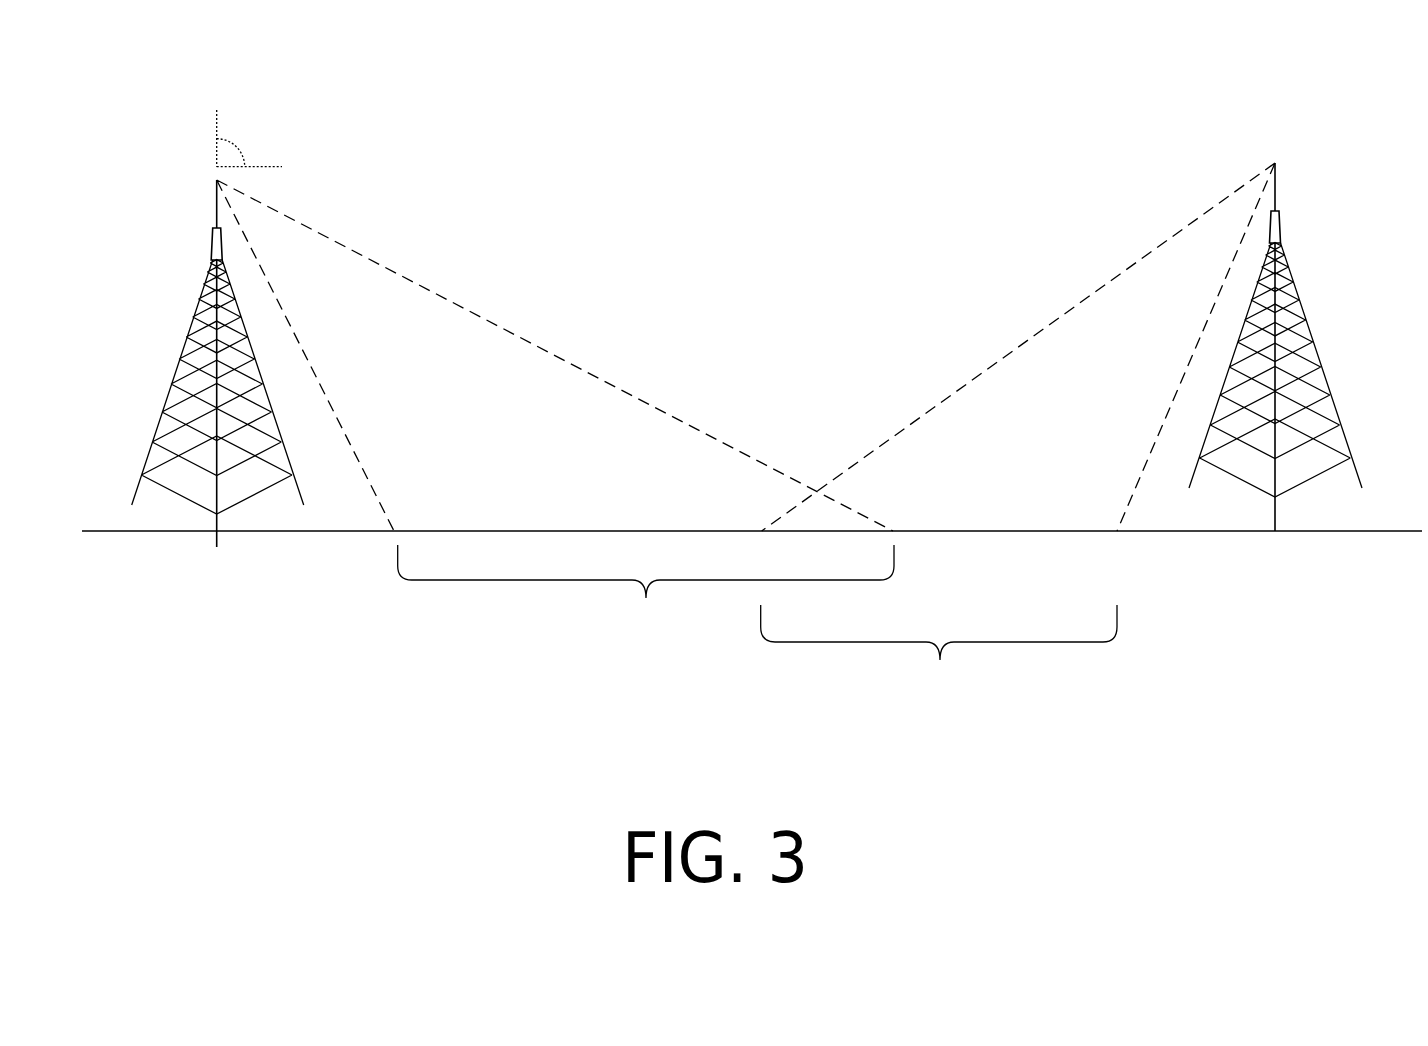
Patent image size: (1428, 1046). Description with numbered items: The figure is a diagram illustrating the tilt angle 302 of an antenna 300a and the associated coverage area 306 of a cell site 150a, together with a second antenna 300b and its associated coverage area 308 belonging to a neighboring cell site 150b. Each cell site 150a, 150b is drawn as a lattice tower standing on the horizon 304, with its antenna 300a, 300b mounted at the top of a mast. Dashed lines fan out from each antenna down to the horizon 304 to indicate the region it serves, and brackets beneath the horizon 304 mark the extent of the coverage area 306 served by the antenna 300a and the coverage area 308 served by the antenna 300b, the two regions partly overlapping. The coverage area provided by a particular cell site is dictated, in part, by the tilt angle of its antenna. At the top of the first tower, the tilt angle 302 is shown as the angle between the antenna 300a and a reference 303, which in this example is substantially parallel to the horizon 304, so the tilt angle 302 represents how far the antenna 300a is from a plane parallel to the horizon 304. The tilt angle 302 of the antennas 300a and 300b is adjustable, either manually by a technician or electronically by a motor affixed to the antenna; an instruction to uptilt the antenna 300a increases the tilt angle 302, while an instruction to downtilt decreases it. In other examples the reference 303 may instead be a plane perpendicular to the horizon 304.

The cell site 150a is at (175, 305).
The cell site 150b is at (1312, 278).
The antenna 300a is at (210, 197).
The antenna 300b is at (1293, 172).
The tilt angle 302 is at (262, 120).
The reference 303 is at (282, 167).
The horizon 304 is at (493, 533).
The coverage area 306 is at (555, 421).
The coverage area 308 is at (1018, 441).